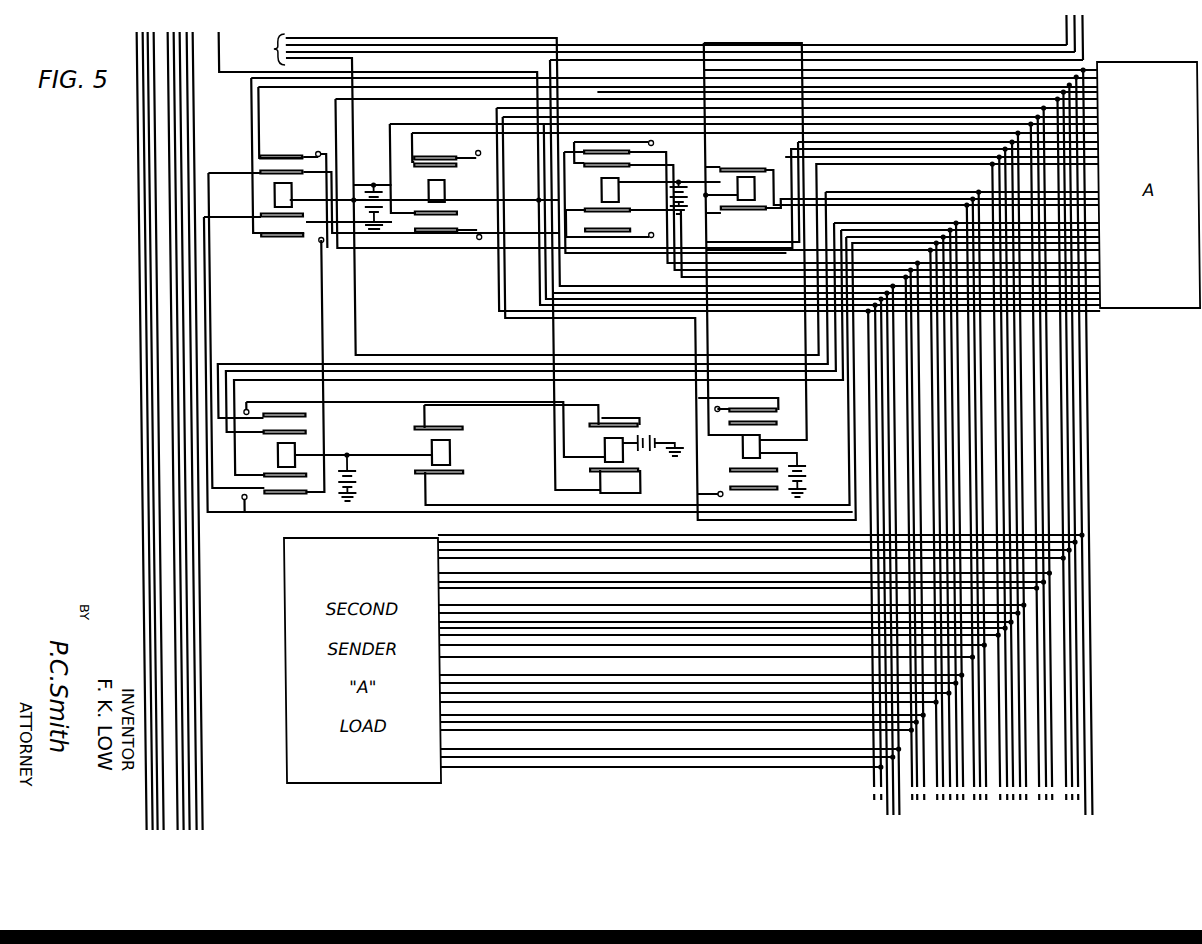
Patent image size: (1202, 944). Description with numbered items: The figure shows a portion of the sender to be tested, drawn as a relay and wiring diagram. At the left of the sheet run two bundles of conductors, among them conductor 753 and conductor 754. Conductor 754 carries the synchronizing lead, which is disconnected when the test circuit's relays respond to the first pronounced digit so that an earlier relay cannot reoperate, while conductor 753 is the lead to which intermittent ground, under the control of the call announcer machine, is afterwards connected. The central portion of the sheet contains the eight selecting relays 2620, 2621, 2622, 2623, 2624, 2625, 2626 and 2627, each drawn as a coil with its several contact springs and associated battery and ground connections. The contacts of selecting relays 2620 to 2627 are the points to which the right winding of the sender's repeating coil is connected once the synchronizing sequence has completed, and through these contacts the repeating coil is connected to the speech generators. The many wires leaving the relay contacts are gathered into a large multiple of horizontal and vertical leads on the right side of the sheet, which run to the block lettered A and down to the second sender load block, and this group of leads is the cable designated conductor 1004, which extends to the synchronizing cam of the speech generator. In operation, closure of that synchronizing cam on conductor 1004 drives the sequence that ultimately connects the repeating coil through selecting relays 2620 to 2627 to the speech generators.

The conductor 753 is at (159, 608).
The conductor 754 is at (198, 631).
The conductor 1004 is at (1086, 44).
The selecting relay 2620 is at (603, 448).
The selecting relay 2621 is at (448, 452).
The selecting relay 2622 is at (286, 457).
The selecting relay 2623 is at (758, 447).
The selecting relay 2624 is at (283, 197).
The selecting relay 2625 is at (748, 183).
The selecting relay 2626 is at (438, 197).
The selecting relay 2627 is at (611, 195).